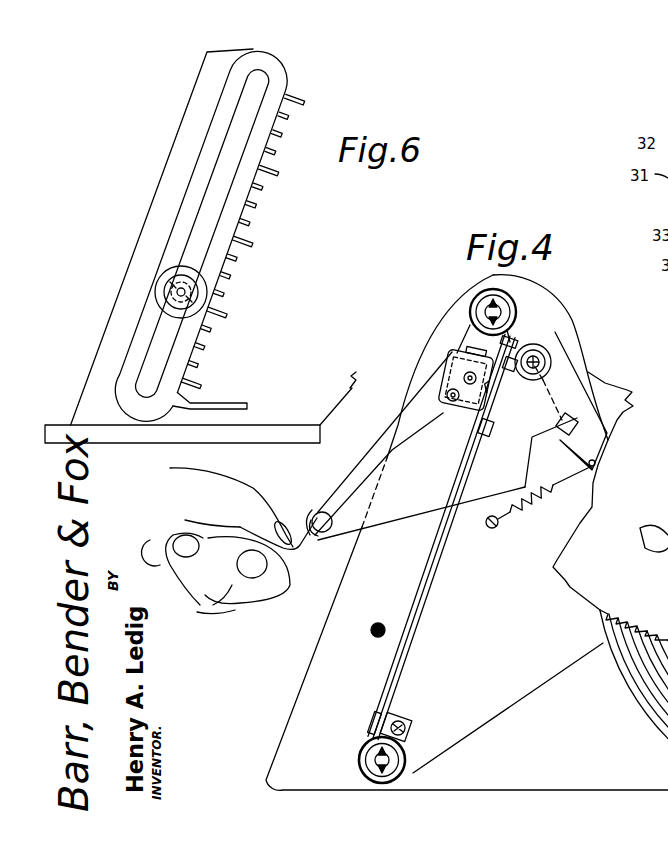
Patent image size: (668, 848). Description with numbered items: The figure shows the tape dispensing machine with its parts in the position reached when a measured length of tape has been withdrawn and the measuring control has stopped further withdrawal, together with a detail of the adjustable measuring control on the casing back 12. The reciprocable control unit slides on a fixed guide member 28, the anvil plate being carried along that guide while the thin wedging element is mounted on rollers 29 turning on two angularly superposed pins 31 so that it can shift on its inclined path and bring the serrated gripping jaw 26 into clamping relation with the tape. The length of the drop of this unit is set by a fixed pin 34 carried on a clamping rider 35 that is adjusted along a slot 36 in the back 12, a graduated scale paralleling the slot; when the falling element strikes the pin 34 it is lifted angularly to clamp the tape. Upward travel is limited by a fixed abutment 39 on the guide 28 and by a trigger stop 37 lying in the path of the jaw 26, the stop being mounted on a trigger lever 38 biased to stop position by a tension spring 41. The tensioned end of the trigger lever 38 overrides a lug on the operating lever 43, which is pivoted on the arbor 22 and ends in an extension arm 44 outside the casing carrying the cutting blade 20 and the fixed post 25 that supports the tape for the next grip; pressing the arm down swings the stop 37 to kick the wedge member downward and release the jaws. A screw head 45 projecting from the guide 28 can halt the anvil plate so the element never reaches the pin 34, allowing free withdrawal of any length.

In FIG. 6, the back 12 is at (183, 148).
In FIG. 6, the slot 36 is at (215, 192).
In FIG. 6, the fixed pin 34 is at (170, 299).
In FIG. 4, the fixed pin 34 is at (373, 636).
In FIG. 6, the clamping rider 35 is at (178, 292).
In FIG. 4, the cutting blade 20 is at (320, 543).
In FIG. 4, the fixed post 25 is at (327, 512).
In FIG. 4, the arbor 22 is at (497, 313).
In FIG. 4, the gripping jaw 26 is at (494, 418).
In FIG. 4, the guide member 28 is at (430, 592).
In FIG. 4, the rollers 29 is at (460, 353).
In FIG. 4, the pins 31 is at (452, 392).
In FIG. 4, the trigger stop 37 is at (509, 342).
In FIG. 4, the fixed abutment 39 is at (516, 353).
In FIG. 4, the operating lever 43 is at (560, 400).
In FIG. 4, the trigger lever 38 is at (595, 443).
In FIG. 4, the tension spring 41 is at (552, 495).
In FIG. 4, the extension arm 44 is at (467, 533).
In FIG. 4, the screw head 45 is at (373, 725).